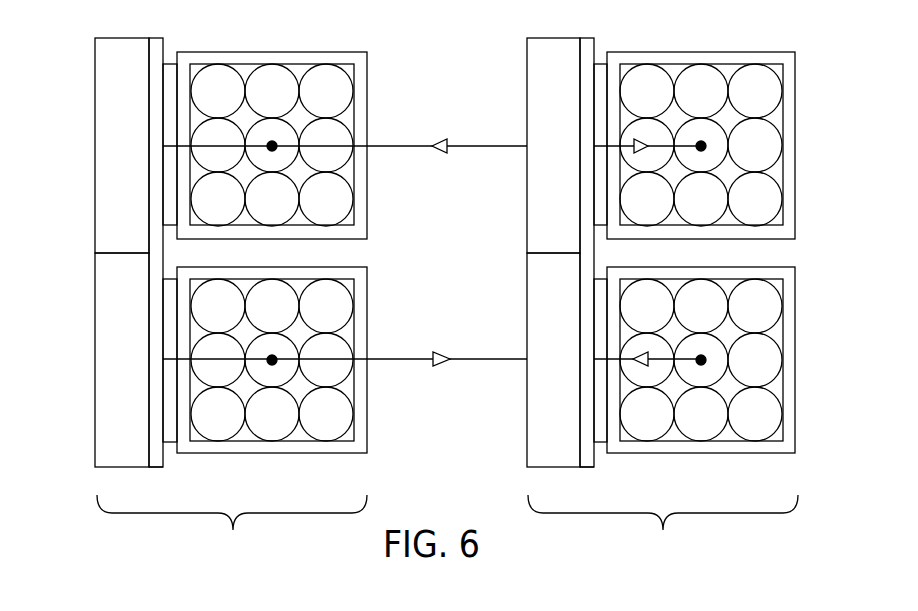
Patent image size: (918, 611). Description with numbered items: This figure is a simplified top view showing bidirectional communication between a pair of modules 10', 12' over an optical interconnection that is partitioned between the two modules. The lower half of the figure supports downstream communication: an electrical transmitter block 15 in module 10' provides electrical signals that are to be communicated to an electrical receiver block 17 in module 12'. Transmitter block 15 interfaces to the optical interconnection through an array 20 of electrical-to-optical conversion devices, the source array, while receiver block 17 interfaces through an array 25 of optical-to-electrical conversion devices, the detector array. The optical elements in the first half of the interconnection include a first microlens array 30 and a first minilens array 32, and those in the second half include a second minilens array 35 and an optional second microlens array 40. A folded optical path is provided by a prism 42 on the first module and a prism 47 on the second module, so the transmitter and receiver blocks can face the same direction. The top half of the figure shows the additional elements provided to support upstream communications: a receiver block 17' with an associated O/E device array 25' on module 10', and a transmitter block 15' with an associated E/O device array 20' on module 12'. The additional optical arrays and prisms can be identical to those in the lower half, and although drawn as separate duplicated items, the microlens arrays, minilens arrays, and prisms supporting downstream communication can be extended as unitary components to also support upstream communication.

The module 10' is at (232, 532).
The module 12' is at (663, 533).
The transmitter block 15 is at (102, 360).
The transmitter block 15' is at (555, 133).
The receiver block 17 is at (533, 360).
The receiver block 17' is at (123, 133).
The array of electrical-to-optical conversion devices 20 is at (132, 485).
The E/O device array 20' is at (608, 240).
The array of optical-to-electrical conversion devices 25 is at (565, 485).
The O/E device array 25' is at (178, 240).
The first microlens array 30 is at (170, 442).
The first minilens array 32 is at (355, 340).
The second minilens array 35 is at (785, 340).
The second microlens array 40 is at (600, 442).
The prism 42 is at (368, 266).
The prism 47 is at (797, 266).